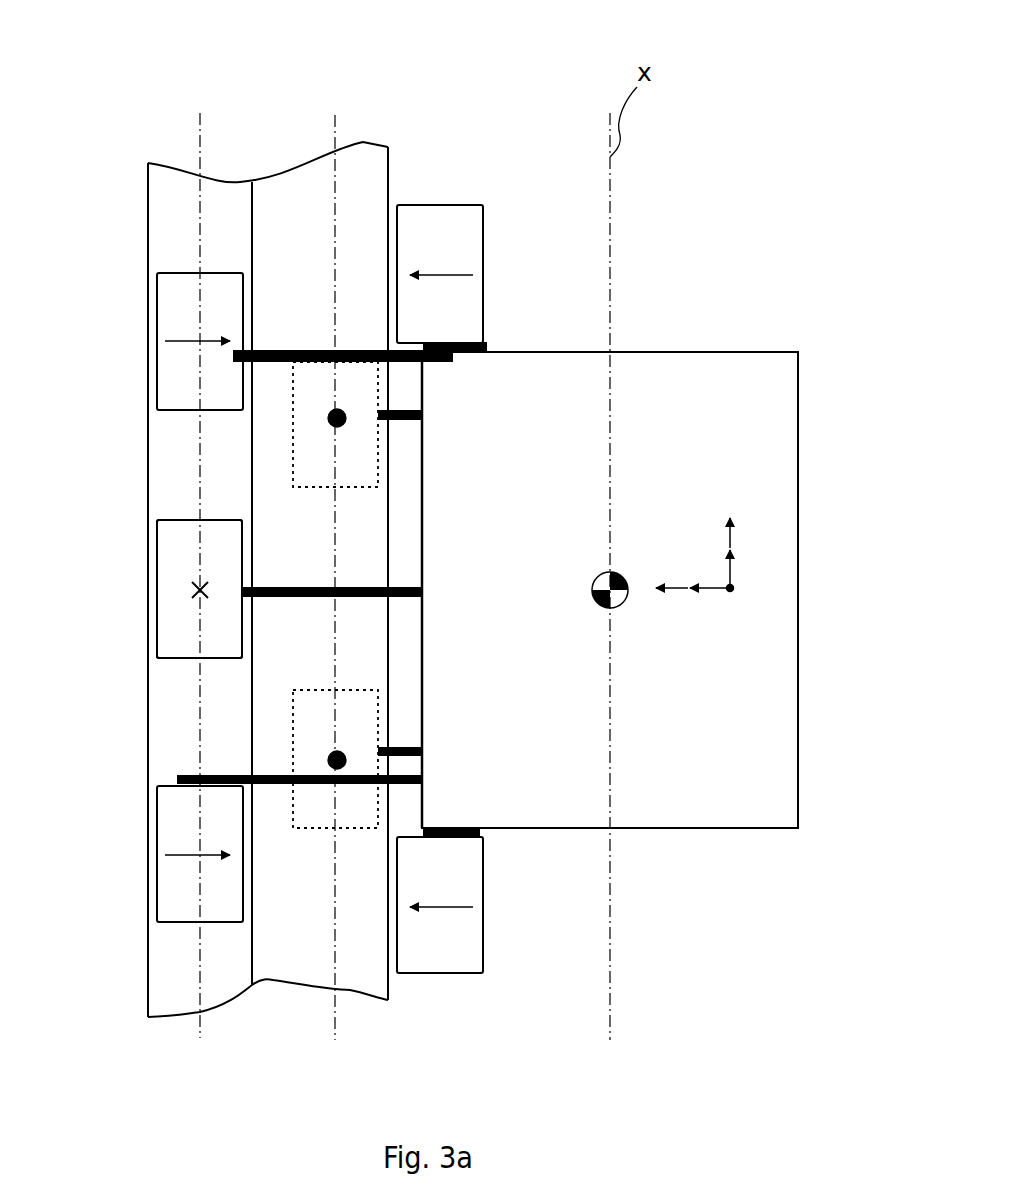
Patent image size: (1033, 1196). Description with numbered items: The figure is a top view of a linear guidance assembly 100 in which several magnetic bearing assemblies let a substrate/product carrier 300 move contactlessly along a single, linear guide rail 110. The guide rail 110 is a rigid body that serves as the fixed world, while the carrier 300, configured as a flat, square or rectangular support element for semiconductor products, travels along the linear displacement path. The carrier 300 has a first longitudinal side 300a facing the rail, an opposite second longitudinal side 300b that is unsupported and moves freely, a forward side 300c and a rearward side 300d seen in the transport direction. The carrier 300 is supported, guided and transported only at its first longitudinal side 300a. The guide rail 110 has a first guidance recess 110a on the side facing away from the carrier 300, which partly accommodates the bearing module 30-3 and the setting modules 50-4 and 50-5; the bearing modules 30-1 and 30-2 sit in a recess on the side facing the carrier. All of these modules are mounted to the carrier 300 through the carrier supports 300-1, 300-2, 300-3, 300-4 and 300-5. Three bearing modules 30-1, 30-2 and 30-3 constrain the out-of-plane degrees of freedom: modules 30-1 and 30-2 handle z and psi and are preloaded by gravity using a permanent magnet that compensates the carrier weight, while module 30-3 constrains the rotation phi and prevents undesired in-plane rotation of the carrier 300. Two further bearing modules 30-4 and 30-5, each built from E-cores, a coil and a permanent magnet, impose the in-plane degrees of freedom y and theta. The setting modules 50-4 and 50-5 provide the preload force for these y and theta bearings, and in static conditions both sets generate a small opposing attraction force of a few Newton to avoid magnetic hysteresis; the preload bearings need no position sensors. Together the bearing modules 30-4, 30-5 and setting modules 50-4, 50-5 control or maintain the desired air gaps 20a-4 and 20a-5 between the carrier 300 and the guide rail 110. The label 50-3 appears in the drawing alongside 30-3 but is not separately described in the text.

The linear guidance assembly 100 is at (250, 101).
The single linear guide rail 110 is at (315, 552).
The first guidance recess 110a is at (183, 448).
The air gap 20a-4 is at (248, 273).
The air gap 20a-5 is at (250, 890).
The magnetic bearing module 30-1 is at (300, 463).
The magnetic bearing module 30-2 is at (312, 722).
The magnetic bearing module 30-3 is at (172, 612).
The magnetic bearing module 30-4 is at (453, 228).
The magnetic bearing module 30-5 is at (467, 973).
The sensor 50-3 is at (140, 592).
The setting module 50-4 is at (182, 303).
The setting module 50-5 is at (168, 885).
The product carrier 300 is at (710, 712).
The first longitudinal side 300a is at (418, 648).
The second longitudinal side 300b is at (802, 407).
The forward side 300c is at (682, 350).
The rearward side 300d is at (745, 833).
The carrier support 300-1 is at (412, 410).
The carrier support 300-2 is at (422, 757).
The carrier support 300-3 is at (400, 588).
The carrier support 300-4 is at (372, 350).
The carrier support 300-5 is at (275, 784).